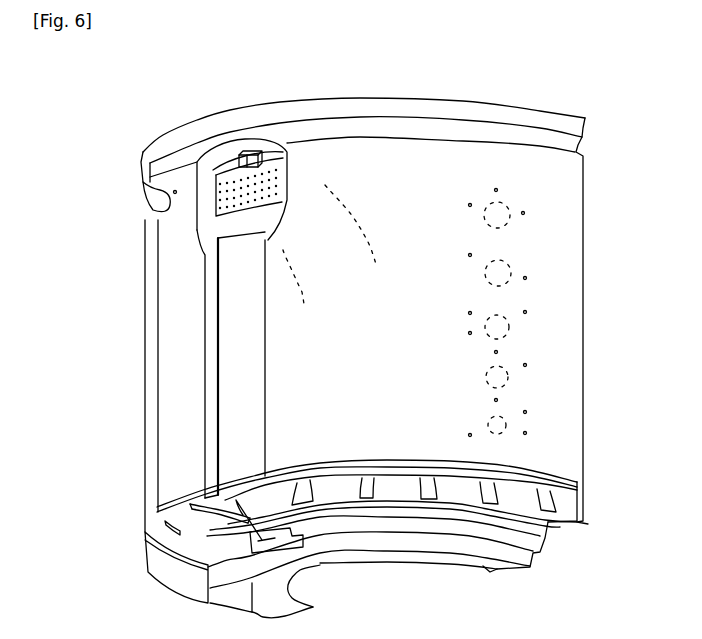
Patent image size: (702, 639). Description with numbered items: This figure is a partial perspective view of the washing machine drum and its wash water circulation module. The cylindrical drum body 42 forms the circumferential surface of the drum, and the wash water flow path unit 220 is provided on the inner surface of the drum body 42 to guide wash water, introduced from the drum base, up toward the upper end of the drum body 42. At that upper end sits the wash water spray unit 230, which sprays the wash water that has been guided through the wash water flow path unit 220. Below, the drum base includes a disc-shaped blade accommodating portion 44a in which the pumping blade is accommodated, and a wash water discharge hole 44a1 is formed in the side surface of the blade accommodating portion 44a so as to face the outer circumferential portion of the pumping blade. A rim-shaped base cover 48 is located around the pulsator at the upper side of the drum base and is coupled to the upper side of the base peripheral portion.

The drum body 42 is at (503, 158).
The wash water flow path unit 220 is at (237, 325).
The wash water spray unit 230 is at (250, 153).
The base cover 48 is at (387, 493).
The blade accommodating portion 44a is at (323, 562).
The wash water discharge hole 44a1 is at (160, 508).